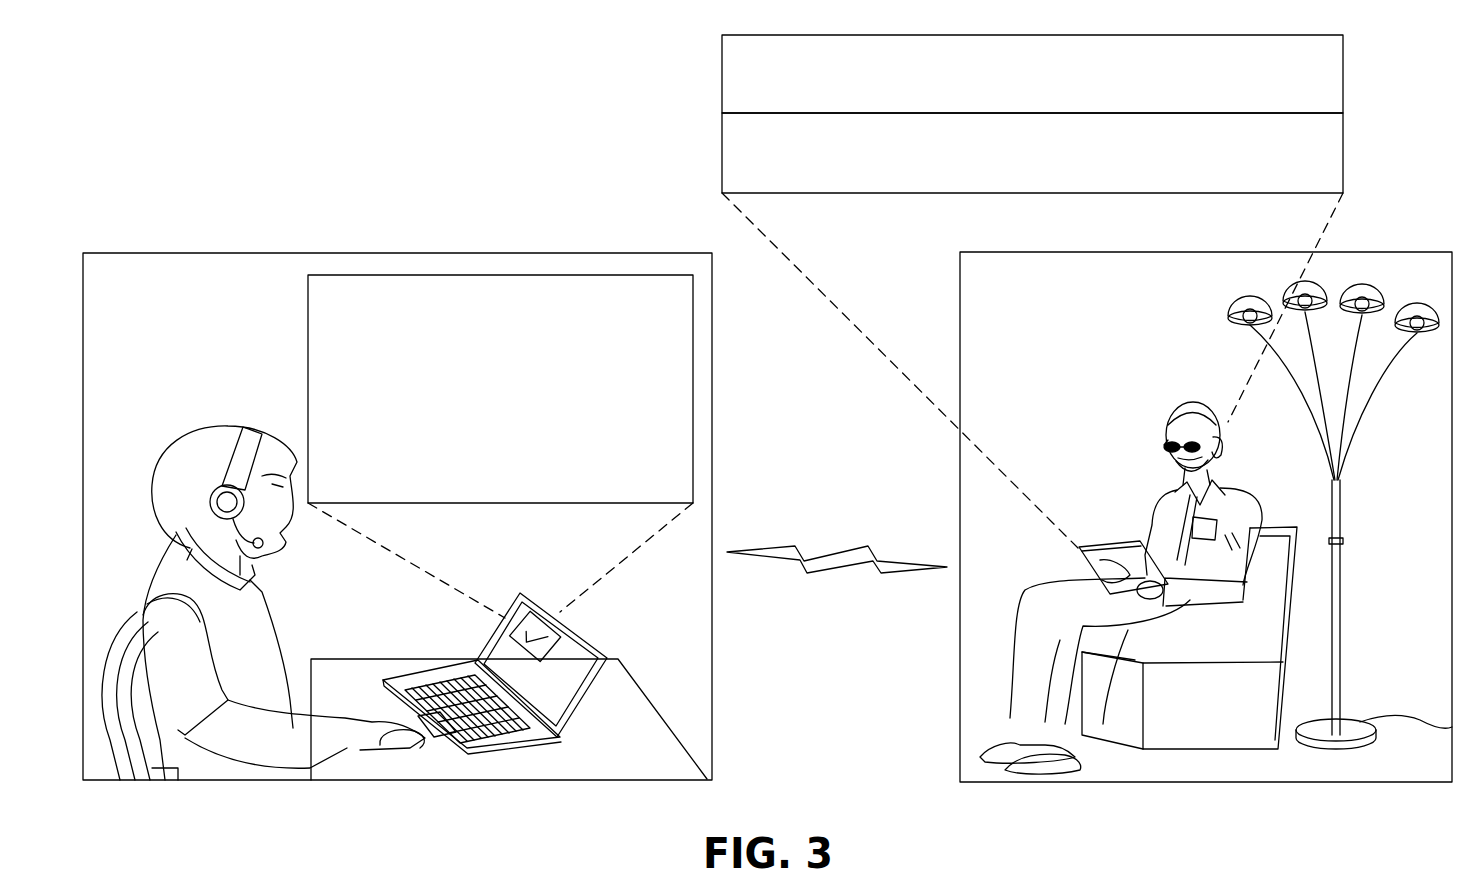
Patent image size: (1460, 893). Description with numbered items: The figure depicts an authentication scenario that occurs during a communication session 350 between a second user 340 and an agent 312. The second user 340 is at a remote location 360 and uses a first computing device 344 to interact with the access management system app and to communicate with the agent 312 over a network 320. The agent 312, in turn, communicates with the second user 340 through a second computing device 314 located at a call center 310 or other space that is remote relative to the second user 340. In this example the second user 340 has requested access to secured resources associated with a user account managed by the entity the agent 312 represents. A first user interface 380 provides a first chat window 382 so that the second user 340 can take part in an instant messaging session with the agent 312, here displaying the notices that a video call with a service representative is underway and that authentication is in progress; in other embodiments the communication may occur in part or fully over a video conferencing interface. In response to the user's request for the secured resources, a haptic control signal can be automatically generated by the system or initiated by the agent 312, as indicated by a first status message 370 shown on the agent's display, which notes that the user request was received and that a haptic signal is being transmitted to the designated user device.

The call center 310 is at (245, 253).
The agent 312 is at (216, 421).
The second computing device 314 is at (516, 750).
The network 320 is at (837, 550).
The second user 340 is at (1152, 427).
The first computing device 344 is at (1103, 546).
The communication session 350 is at (387, 172).
The remote location 360 is at (1385, 252).
The first status message 370 is at (507, 275).
The first user interface 380 is at (722, 82).
The first chat window 382 is at (722, 152).